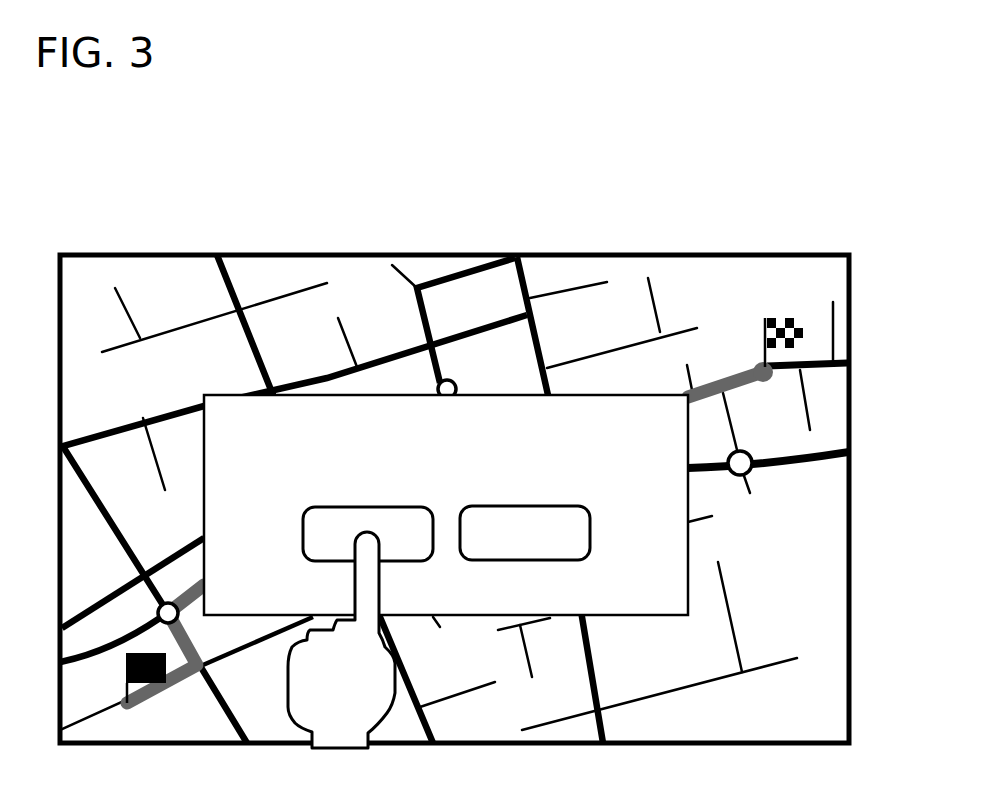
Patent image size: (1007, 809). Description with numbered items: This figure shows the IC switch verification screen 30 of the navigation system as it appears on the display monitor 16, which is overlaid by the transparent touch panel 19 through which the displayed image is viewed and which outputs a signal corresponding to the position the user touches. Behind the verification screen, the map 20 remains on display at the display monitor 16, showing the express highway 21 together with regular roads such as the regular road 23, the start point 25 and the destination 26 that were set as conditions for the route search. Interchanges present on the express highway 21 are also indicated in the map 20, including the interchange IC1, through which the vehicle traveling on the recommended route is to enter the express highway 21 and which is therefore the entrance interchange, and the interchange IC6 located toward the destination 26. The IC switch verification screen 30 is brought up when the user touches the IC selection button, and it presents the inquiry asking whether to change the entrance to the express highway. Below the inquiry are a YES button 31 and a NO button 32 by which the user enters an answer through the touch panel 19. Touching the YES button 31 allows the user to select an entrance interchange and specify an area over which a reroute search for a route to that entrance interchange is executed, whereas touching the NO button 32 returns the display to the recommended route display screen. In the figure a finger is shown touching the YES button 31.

The display monitor 16 is at (458, 447).
The touch panel 19 is at (727, 239).
The map 20 is at (826, 344).
The express highway 21 is at (120, 630).
The regular road 23 is at (260, 643).
The start point 25 is at (120, 700).
The destination 26 is at (760, 363).
The IC switch verification screen 30 is at (446, 409).
The YES button 31 is at (413, 546).
The NO button 32 is at (570, 548).
The interchange IC1 is at (167, 593).
The interchange IC6 is at (748, 477).